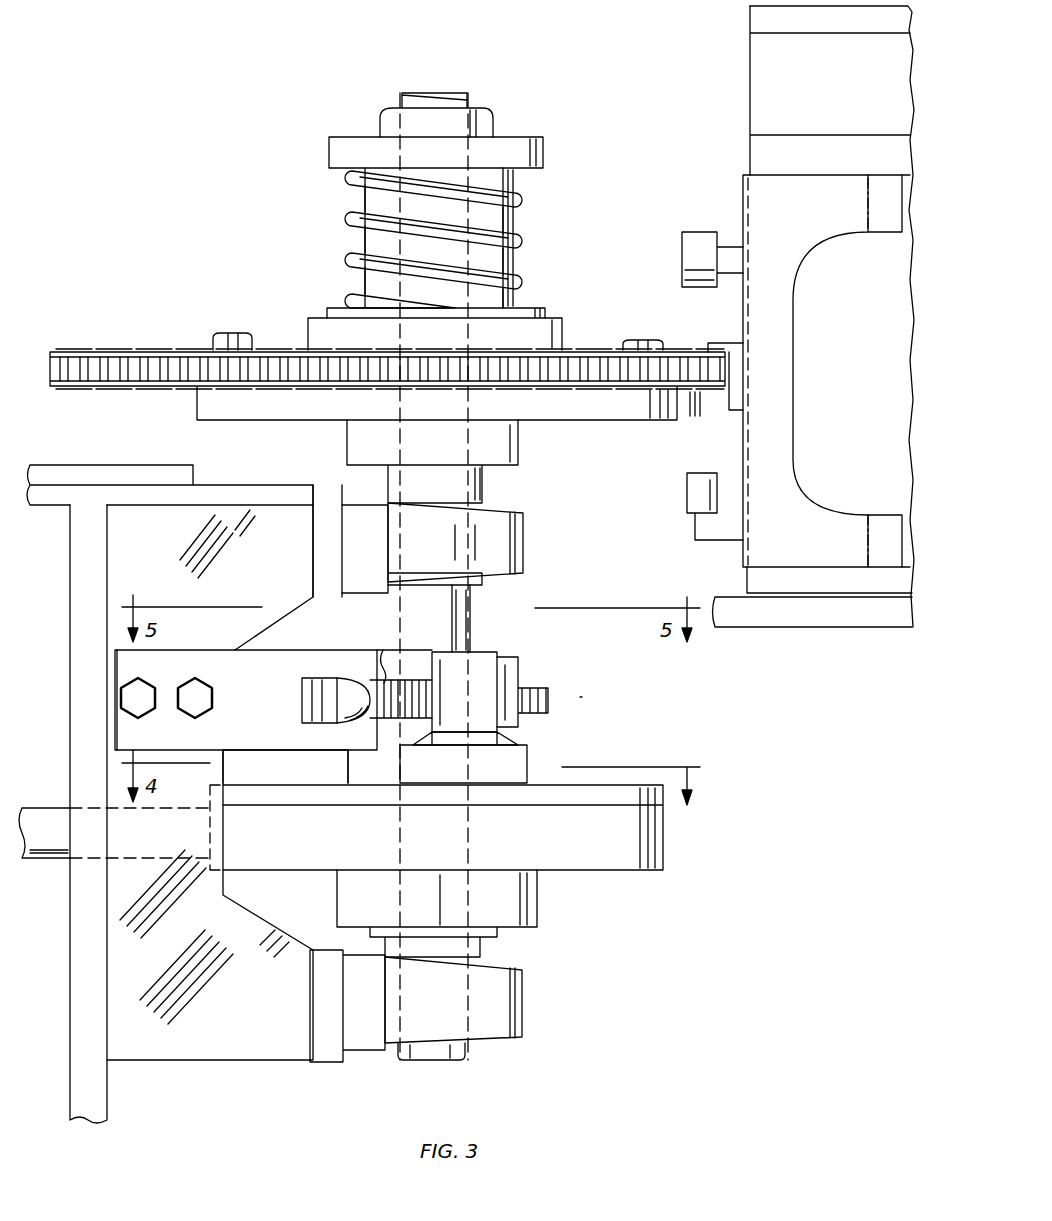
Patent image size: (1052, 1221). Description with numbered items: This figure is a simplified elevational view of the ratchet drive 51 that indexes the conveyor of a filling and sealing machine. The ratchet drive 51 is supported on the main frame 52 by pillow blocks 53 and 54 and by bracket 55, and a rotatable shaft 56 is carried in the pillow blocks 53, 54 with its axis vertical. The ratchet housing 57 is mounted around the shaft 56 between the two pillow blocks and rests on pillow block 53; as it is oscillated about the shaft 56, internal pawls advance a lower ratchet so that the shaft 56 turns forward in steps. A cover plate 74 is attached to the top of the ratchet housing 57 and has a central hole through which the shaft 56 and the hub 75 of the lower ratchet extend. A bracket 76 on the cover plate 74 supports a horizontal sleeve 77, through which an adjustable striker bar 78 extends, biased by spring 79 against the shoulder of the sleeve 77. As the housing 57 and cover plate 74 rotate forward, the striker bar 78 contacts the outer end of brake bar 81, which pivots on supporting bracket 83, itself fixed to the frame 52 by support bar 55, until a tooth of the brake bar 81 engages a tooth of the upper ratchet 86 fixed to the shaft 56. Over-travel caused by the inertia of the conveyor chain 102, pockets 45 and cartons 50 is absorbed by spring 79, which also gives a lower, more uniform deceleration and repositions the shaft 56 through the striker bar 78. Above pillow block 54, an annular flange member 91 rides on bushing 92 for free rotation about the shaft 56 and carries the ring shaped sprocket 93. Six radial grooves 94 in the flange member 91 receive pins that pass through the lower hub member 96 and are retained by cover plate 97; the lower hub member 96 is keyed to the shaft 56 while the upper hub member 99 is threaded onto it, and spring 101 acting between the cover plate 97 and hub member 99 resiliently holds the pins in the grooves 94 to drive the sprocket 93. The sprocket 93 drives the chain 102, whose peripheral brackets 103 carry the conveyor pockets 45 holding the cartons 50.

The conveyor pockets 45 is at (743, 177).
The cartons 50 is at (750, 85).
The ratchet drive 51 is at (592, 702).
The main frame 52 is at (104, 1088).
The pillow block 53 is at (522, 1000).
The pillow block 54 is at (525, 543).
The bracket 55 is at (220, 1078).
The rotatable shaft 56 is at (470, 604).
The ratchet housing 57 is at (665, 845).
The cover plate 74 is at (605, 783).
The hub 75 is at (525, 742).
The bracket 76 is at (525, 772).
The sleeve 77 is at (507, 658).
The adjustable striker bar 78 is at (364, 708).
The spring 79 is at (383, 649).
The brake bar 81 is at (310, 722).
The supporting bracket 83 is at (256, 752).
The upper ratchet 86 is at (406, 660).
The annular flange member 91 is at (630, 423).
The bushing 92 is at (483, 472).
The ring shaped sprocket 93 is at (692, 394).
The radial grooves 94 is at (360, 350).
The lower hub member 96 is at (562, 331).
The cover plate 97 is at (542, 309).
The upper hub member 99 is at (545, 158).
The spring 101 is at (518, 191).
The conveyor chain 102 is at (90, 348).
The brackets 103 is at (718, 343).